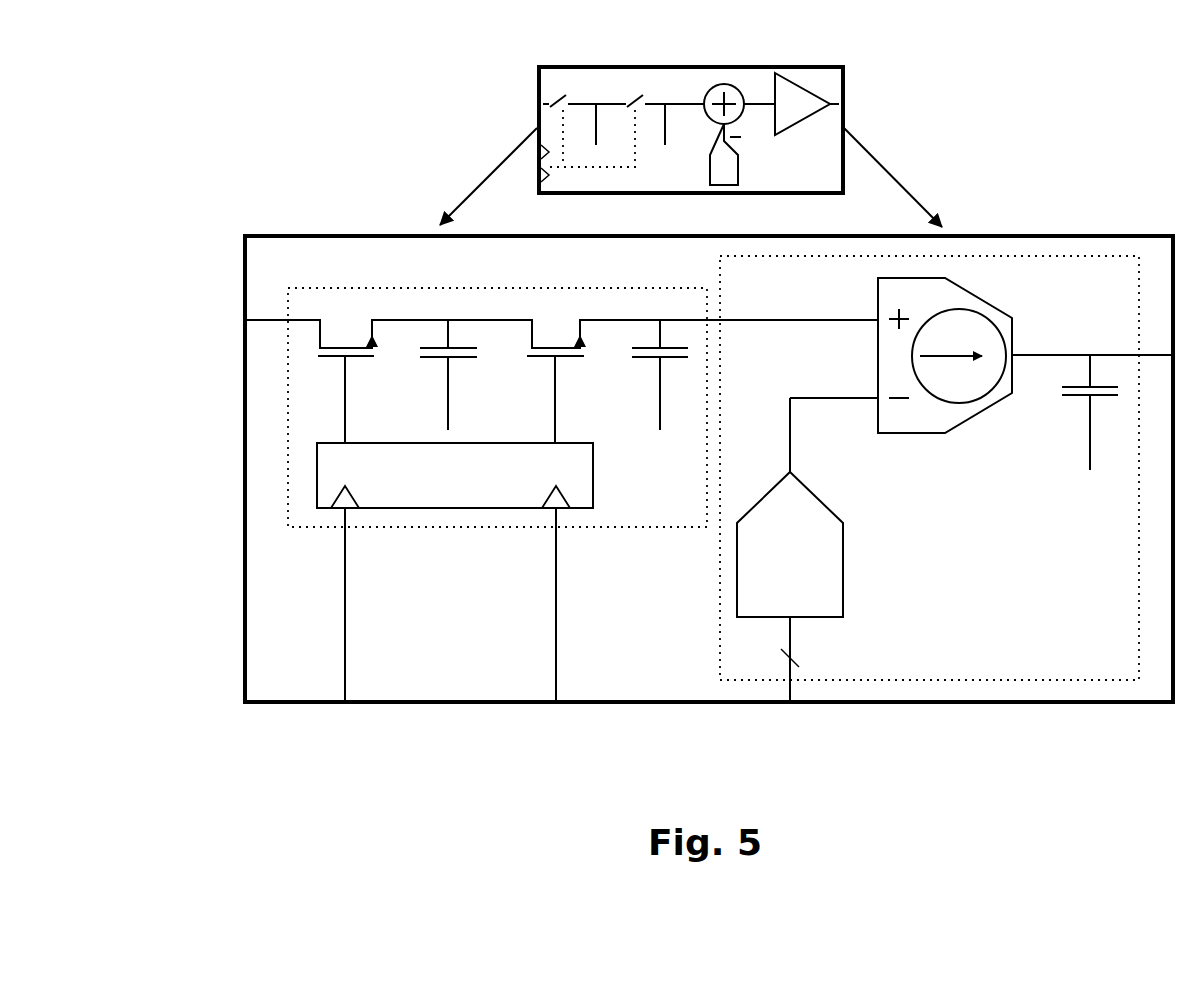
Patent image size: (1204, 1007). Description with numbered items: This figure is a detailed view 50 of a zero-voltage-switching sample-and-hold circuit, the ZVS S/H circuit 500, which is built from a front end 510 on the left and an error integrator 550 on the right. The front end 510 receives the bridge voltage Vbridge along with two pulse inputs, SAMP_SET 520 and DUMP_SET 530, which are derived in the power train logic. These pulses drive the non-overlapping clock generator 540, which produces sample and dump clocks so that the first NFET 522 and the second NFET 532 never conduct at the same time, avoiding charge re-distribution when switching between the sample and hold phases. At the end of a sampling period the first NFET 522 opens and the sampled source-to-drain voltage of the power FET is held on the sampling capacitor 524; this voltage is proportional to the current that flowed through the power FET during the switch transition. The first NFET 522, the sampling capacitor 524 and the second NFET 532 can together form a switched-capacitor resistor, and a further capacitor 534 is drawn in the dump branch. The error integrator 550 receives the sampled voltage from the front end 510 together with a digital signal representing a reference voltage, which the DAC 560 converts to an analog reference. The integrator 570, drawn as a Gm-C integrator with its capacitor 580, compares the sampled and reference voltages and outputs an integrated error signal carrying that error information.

The detailed view 50 is at (206, 54).
The ZVS S/H circuit 500 is at (526, 54).
The front end 510 is at (298, 262).
The SAMP_SET 520 is at (323, 566).
The first NFET 522 is at (356, 372).
The sampling capacitor 524 is at (460, 372).
The DUMP_SET 530 is at (544, 563).
The second NFET 532 is at (534, 372).
The dump capacitor 534 is at (634, 372).
The non-overlapping clock generator 540 is at (604, 468).
The error integrator 550 is at (698, 604).
The digital-to-analog converter 560 is at (790, 550).
The integrator 570 is at (1010, 295).
The capacitor 580 is at (1103, 403).